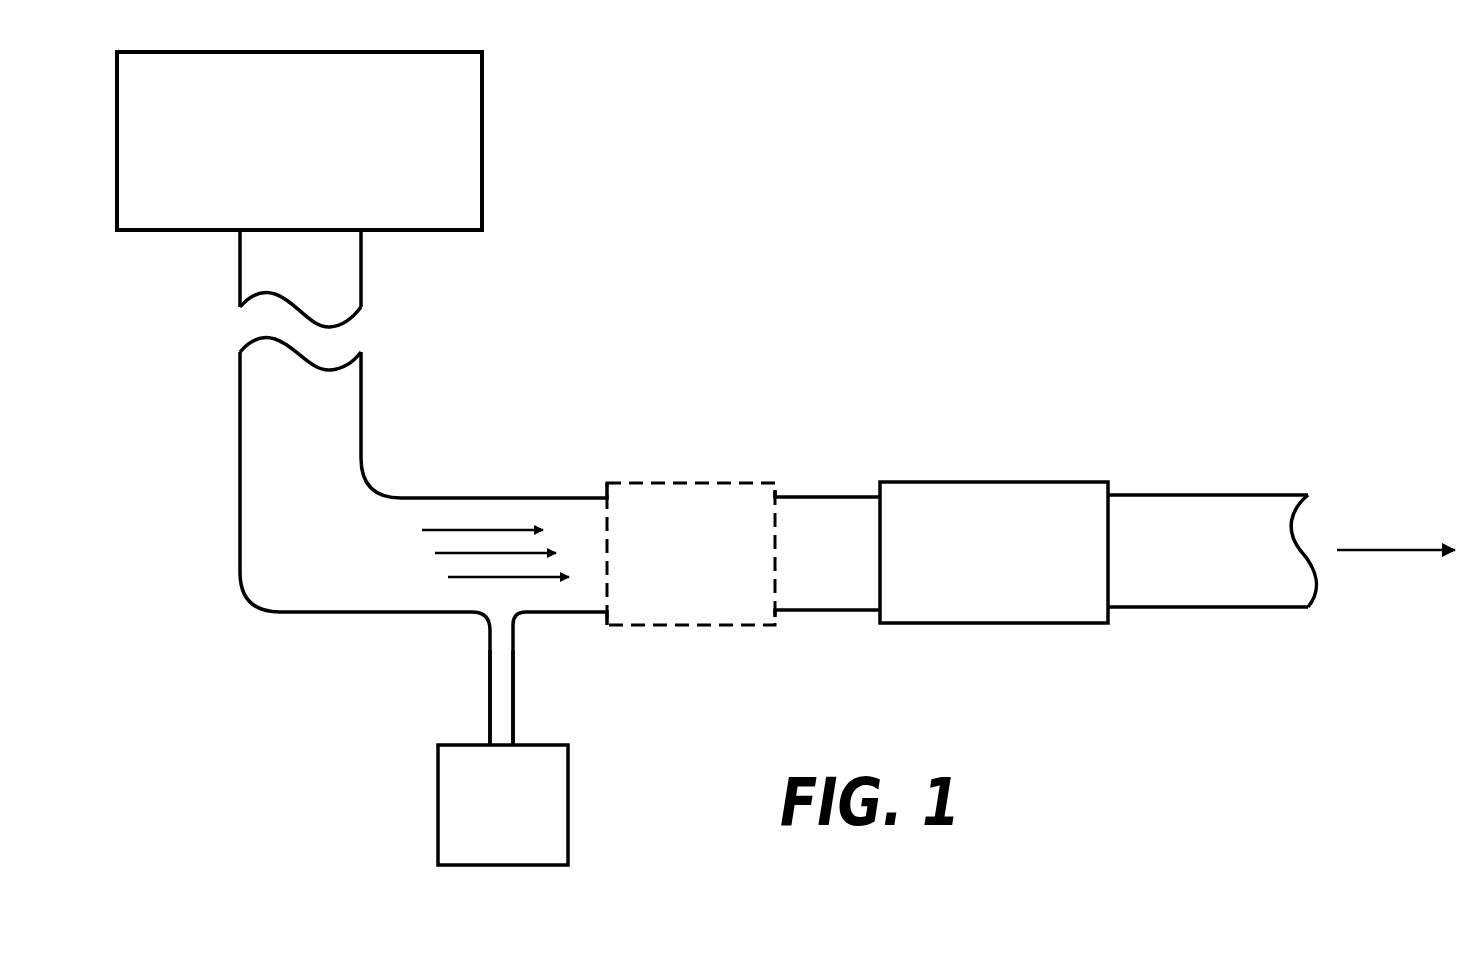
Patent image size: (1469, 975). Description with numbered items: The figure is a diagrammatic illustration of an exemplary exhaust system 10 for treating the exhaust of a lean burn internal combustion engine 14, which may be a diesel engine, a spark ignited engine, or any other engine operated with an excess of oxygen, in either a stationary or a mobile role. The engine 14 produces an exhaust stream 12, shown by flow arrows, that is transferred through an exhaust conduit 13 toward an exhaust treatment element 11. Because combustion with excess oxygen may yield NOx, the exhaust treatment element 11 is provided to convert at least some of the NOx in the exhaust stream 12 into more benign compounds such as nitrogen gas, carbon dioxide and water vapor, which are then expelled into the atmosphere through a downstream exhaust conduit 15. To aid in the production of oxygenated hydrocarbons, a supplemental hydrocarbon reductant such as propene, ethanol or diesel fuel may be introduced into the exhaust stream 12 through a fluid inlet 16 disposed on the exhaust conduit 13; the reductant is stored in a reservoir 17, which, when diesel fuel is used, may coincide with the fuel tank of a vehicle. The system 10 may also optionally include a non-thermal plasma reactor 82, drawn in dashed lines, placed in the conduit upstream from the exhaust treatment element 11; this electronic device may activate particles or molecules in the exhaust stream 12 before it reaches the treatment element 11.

The exhaust system 10 is at (818, 286).
The exhaust treatment element 11 is at (978, 482).
The exhaust stream 12 is at (502, 528).
The exhaust conduit 13 is at (428, 498).
The lean burn internal combustion engine 14 is at (482, 136).
The exhaust conduit 15 is at (1188, 495).
The fluid inlet 16 is at (522, 615).
The reservoir 17 is at (568, 800).
The non-thermal plasma reactor 82 is at (687, 480).